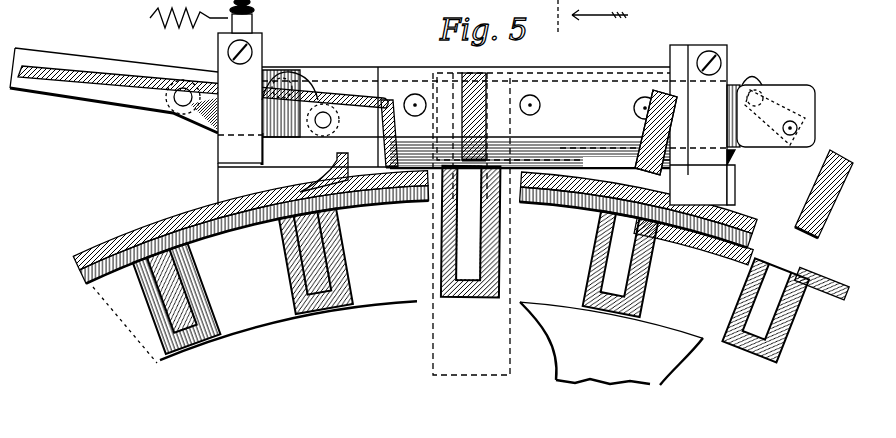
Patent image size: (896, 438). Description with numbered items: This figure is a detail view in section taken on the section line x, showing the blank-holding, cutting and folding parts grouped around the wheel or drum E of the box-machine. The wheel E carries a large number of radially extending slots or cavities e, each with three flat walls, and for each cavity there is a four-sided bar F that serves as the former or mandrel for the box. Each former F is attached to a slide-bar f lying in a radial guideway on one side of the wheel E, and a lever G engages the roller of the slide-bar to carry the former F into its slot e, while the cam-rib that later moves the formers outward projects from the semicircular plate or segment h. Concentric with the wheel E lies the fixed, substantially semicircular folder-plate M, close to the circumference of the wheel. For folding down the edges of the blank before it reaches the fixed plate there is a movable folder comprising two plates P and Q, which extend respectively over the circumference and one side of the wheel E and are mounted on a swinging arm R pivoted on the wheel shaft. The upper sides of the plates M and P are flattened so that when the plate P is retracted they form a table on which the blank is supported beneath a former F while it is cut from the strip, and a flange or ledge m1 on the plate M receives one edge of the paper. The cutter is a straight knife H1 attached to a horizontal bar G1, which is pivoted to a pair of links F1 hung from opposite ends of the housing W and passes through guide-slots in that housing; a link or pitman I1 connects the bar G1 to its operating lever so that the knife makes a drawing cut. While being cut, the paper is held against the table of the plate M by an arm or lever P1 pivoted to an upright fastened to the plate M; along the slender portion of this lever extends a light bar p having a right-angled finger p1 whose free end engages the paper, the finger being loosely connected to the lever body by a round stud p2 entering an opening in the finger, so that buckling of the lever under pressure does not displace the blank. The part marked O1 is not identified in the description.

The link or pitman I1 is at (70, 60).
The light bar p is at (102, 68).
The arm or lever P1 is at (136, 80).
The links F1 is at (292, 70).
The horizontal bar G1 is at (353, 80).
The round stud p2 is at (396, 96).
The section line x is at (587, 24).
The wheel or drum E is at (288, 276).
The slide-bar f is at (430, 328).
The semicircular plate or segment h is at (778, 0).
The housing W is at (218, 152).
The fixed folder-plate M is at (214, 203).
The flange or ledge m1 is at (338, 168).
The finger p1 is at (383, 124).
The former or mandrel F is at (300, 299).
The straight cutter or knife H1 is at (713, 87).
The lever G is at (815, 108).
The stud O1 is at (727, 170).
The movable folder-plate P is at (752, 226).
The slots or cavities e is at (285, 254).
The movable folder-plate Q is at (547, 313).
The swinging arm R is at (629, 360).